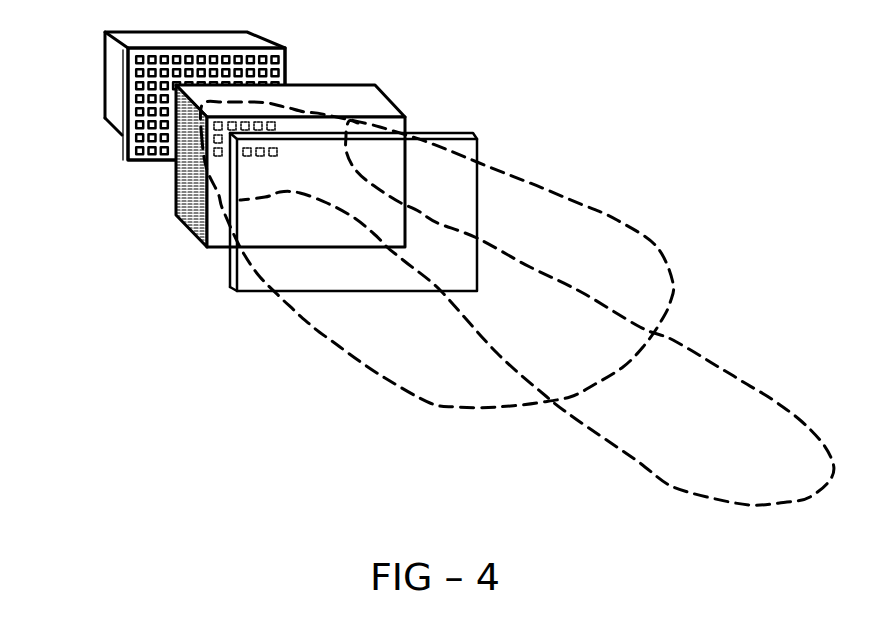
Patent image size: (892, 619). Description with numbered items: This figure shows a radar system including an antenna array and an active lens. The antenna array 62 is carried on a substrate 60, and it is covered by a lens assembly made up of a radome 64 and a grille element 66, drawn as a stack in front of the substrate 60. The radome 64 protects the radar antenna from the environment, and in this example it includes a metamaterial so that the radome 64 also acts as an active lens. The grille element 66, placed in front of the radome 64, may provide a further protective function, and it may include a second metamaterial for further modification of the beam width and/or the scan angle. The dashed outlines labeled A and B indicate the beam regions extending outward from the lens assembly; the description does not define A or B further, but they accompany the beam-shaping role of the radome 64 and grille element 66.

The substrate 60 is at (155, 120).
The antenna array 62 is at (125, 162).
The radome 64 is at (197, 195).
The grille element 66 is at (270, 262).
The first illumination pattern A is at (612, 220).
The second illumination pattern B is at (735, 377).